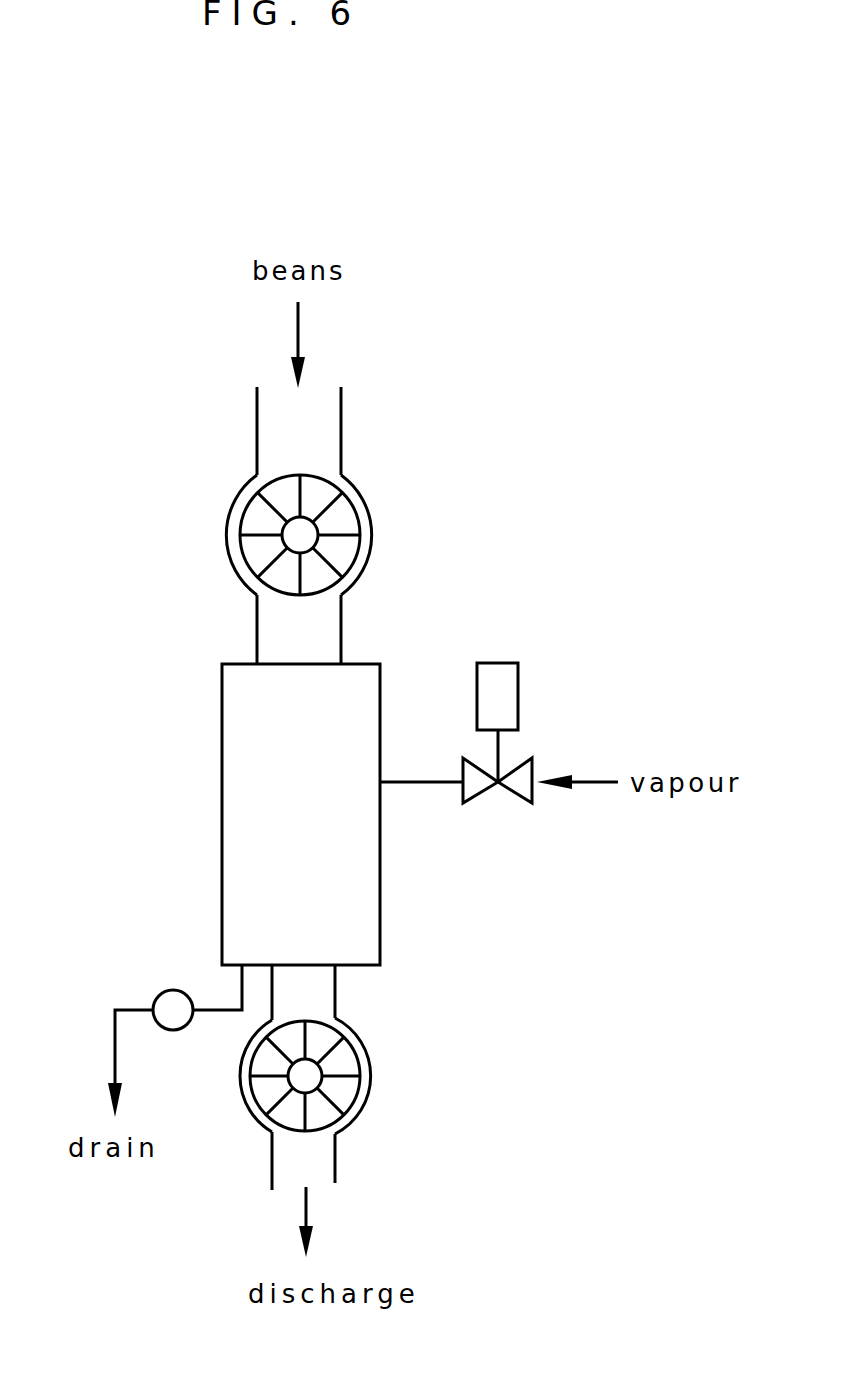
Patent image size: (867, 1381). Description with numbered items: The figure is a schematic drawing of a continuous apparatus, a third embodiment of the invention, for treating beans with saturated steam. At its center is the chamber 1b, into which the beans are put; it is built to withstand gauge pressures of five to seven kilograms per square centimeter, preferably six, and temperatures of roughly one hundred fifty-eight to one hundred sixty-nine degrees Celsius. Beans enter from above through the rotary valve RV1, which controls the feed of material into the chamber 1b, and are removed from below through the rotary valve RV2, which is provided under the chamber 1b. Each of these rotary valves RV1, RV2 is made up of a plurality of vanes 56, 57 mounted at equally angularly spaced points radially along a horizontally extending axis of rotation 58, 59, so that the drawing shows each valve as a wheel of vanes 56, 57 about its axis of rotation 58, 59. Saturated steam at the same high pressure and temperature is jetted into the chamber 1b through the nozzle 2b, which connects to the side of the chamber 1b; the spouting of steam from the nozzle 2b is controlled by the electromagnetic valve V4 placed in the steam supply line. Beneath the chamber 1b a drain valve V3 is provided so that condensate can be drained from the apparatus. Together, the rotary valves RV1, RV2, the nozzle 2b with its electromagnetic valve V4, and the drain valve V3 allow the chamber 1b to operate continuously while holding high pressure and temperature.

The rotary valve RV1 is at (366, 497).
The vanes 56 is at (244, 506).
The axis of rotation 58 is at (293, 537).
The chamber 1b is at (223, 739).
The nozzle 2b is at (417, 783).
The electromagnetic valve V4 is at (510, 792).
The drain valve V3 is at (162, 994).
The rotary valve RV2 is at (370, 1097).
The vanes 57 is at (332, 1055).
The axis of rotation 59 is at (310, 1084).